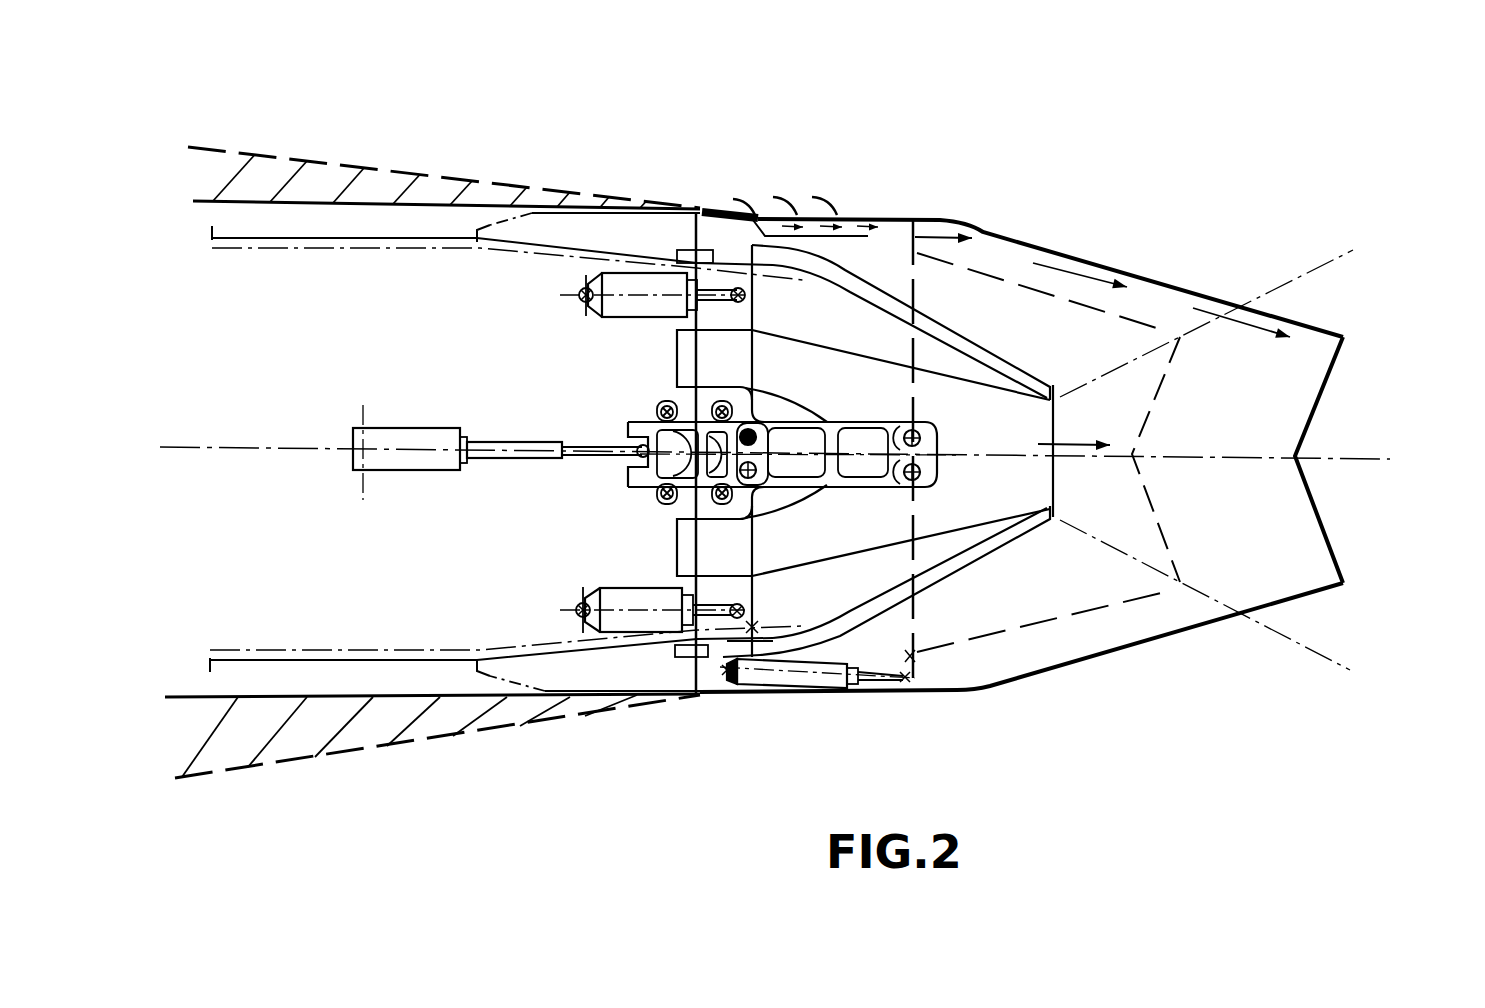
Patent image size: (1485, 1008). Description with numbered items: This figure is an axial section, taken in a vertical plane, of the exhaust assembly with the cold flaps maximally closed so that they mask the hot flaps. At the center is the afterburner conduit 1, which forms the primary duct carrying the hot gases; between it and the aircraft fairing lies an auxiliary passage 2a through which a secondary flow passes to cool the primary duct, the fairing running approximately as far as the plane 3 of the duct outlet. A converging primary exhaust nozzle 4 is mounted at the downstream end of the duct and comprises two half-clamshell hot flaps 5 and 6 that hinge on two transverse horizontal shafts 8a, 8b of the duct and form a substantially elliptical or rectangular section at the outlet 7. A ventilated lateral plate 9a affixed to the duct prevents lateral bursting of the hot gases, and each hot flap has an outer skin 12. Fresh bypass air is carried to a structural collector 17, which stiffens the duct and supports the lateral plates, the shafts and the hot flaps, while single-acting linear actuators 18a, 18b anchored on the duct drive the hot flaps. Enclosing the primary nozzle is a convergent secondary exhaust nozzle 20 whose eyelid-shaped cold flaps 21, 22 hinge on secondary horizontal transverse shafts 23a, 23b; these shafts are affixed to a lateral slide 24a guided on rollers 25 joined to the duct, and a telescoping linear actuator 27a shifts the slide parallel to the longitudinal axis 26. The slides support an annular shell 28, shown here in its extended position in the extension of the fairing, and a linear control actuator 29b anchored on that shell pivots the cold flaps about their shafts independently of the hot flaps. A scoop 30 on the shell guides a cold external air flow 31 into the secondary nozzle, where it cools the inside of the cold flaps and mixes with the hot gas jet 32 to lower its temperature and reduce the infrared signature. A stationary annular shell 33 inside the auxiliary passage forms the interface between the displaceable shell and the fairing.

The afterburner conduit 1 is at (440, 243).
The auxiliary passage 2a is at (322, 222).
The plane of the outlet of the primary duct 3 is at (758, 303).
The converging primary exhaust nozzle 4 is at (1000, 346).
The hot flap 5 is at (939, 330).
The hot flap 6 is at (962, 568).
The outlet of the primary exhaust nozzle 7 is at (1064, 412).
The transverse horizontal shaft 8a is at (757, 435).
The transverse horizontal shaft 8b is at (757, 478).
The ventilated lateral plate 9a is at (842, 530).
The outer skin 12 is at (1166, 644).
The structural collector 17 is at (682, 656).
The single-acting linear actuator 18a is at (612, 305).
The single-acting linear actuator 18b is at (608, 595).
The secondary exhaust nozzle 20 is at (1200, 288).
The cold flap 21 is at (1121, 268).
The cold flap 22 is at (1207, 627).
The secondary horizontal transverse shaft 23a is at (922, 434).
The secondary horizontal transverse shaft 23b is at (922, 480).
The lateral slide 24a is at (630, 423).
The rollers 25 is at (717, 406).
The longitudinal axis 26 is at (1362, 458).
The telescoping linear actuator 27a is at (390, 465).
The annular shell 28 is at (718, 226).
The linear control actuator 29b is at (770, 680).
The scoop 30 is at (850, 208).
The cold external air flow 31 is at (987, 247).
The hot gas jet 32 is at (1075, 448).
The stationary annular shell 33 is at (548, 222).